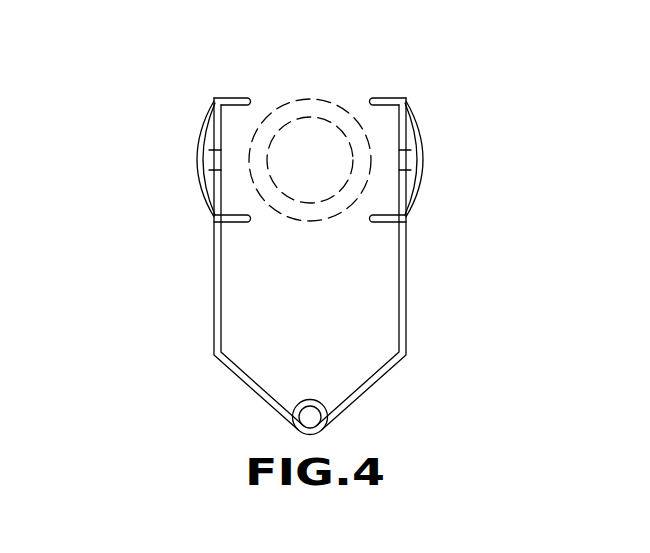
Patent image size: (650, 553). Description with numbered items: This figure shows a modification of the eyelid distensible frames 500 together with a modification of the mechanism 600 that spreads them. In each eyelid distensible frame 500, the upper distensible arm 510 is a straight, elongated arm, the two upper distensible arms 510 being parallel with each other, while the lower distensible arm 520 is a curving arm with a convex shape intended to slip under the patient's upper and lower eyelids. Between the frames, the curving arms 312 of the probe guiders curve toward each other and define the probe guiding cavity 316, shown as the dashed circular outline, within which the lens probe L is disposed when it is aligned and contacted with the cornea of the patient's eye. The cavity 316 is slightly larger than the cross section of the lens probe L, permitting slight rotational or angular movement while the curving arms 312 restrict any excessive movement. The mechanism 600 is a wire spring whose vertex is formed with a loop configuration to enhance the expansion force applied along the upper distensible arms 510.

The curving arm 312 is at (232, 100).
The probe guiding cavity 316 is at (355, 100).
The lens probe L is at (283, 107).
The eyelid distensible frame 500 is at (306, 159).
The upper distensible arm 510 is at (218, 151).
The lower distensible arm 520 is at (205, 192).
The mechanism 600 is at (328, 423).